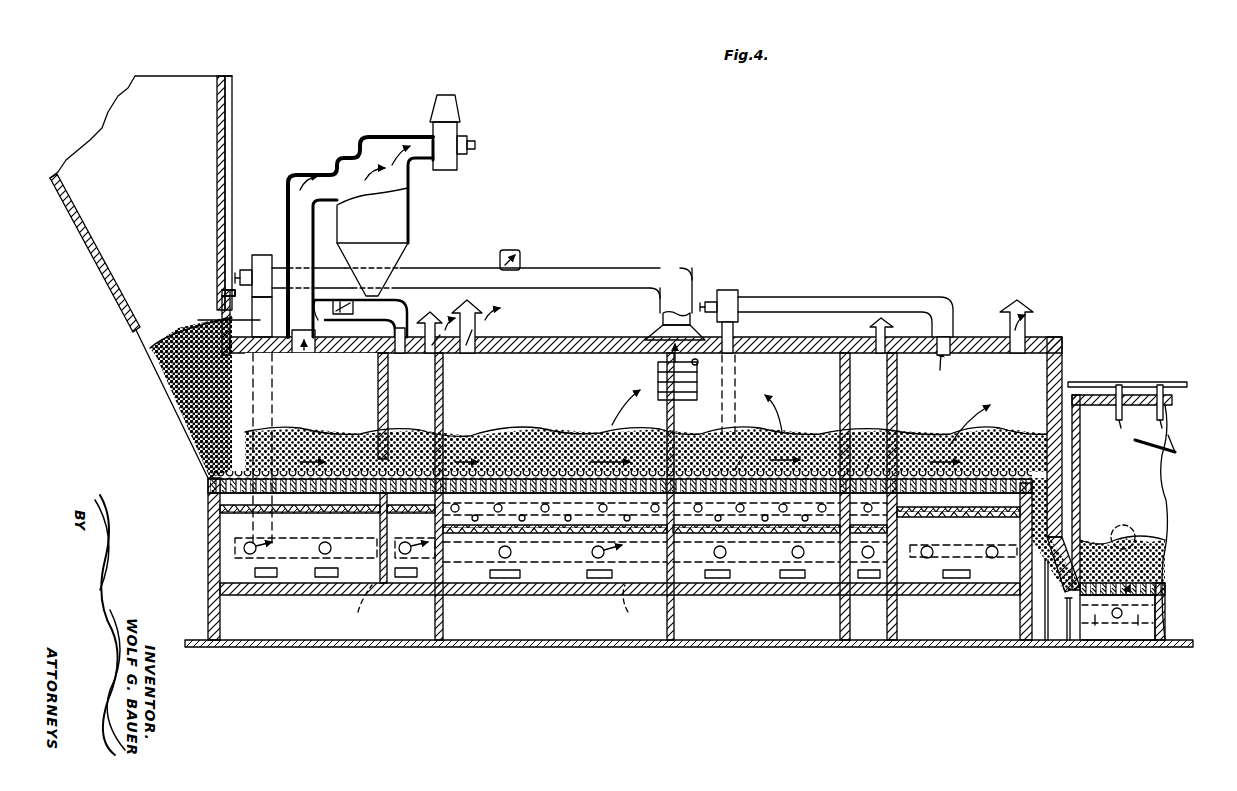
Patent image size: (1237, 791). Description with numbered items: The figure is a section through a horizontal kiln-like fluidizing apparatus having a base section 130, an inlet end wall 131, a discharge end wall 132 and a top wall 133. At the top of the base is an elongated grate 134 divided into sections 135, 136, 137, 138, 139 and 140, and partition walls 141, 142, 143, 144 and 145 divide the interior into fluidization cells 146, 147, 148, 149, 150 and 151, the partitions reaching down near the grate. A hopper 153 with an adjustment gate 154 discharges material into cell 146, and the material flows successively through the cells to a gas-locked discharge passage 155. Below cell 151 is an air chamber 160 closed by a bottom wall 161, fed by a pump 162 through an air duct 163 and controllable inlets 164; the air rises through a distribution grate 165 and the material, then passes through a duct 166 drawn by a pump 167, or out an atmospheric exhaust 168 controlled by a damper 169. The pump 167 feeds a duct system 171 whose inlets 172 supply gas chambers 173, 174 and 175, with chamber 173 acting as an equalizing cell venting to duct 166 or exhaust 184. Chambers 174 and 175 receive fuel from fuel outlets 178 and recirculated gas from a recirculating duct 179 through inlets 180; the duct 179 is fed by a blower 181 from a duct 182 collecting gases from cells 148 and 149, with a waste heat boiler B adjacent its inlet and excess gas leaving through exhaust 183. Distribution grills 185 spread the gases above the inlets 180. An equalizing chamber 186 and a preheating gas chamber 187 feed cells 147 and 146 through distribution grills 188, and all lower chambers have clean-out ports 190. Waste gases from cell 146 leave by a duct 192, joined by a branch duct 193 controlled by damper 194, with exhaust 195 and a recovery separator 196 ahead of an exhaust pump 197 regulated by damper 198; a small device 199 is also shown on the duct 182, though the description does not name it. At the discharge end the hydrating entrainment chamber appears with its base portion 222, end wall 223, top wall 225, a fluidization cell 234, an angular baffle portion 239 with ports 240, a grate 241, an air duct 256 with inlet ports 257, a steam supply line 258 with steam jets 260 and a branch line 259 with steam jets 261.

The base section 130 is at (208, 556).
The inlet end wall 131 is at (262, 385).
The discharge end wall 132 is at (1047, 385).
The top wall 133 is at (562, 340).
The elongated grate 134 is at (212, 489).
The grate section 135 is at (262, 522).
The grate section 136 is at (395, 470).
The grate section 137 is at (550, 470).
The grate section 138 is at (690, 470).
The grate section 139 is at (860, 470).
The grate section 140 is at (972, 470).
The partition wall 141 is at (378, 378).
The partition wall 142 is at (443, 383).
The partition wall 143 is at (667, 424).
The partition wall 144 is at (840, 405).
The partition wall 145 is at (897, 395).
The fluidization cell 146 is at (188, 416).
The fluidization cell 147 is at (400, 400).
The fluidization cell 148 is at (545, 365).
The fluidization cell 149 is at (778, 380).
The fluidization cell 150 is at (897, 377).
The fluidization cell 151 is at (978, 375).
The hopper 153 is at (186, 82).
The adjustment gate 154 is at (232, 288).
The gas-locked discharge passage 155 is at (1078, 503).
The air chamber 160 is at (983, 585).
The bottom wall 161 is at (370, 598).
The pump 162 is at (1130, 530).
The air duct 163 is at (1024, 618).
The individually controllable inlets 164 is at (988, 546).
The distribution grate 165 is at (975, 517).
The duct 166 is at (840, 297).
The pump 167 is at (728, 290).
The atmospheric exhaust 168 is at (1030, 325).
The damper 169 is at (1019, 300).
The duct system 171 is at (745, 428).
The individually controlled inlets 172 is at (809, 452).
The equalizing or cleaning cell 173 is at (862, 598).
The gas chamber 174 is at (768, 598).
The gas chamber 175 is at (560, 598).
The fuel outlets 178 is at (522, 518).
The recirculating duct 179 is at (268, 468).
The inlets 180 is at (398, 545).
The blower 181 is at (263, 257).
The duct 182 is at (662, 268).
The atmospheric exhaust 183 is at (478, 326).
The atmospheric exhaust 184 is at (882, 325).
The distribution grills 185 is at (480, 535).
The equalizing chamber 186 is at (425, 580).
The preheating gas chamber 187 is at (300, 580).
The distribution grills 188 is at (250, 540).
The clean-out ports 190 is at (262, 580).
The duct 192 is at (305, 248).
The branch duct 193 is at (395, 300).
The damper 194 is at (343, 314).
The atmospheric exhaust 195 is at (436, 318).
The recovery separator 196 is at (408, 218).
The exhaust pump 197 is at (450, 125).
The damper 198 is at (428, 136).
The sensor 199 is at (520, 255).
The base portion 222 is at (1085, 645).
The end wall 223 is at (1082, 472).
The top wall 225 is at (1125, 395).
The fluidization cell 234 is at (1166, 478).
The upper baffle portion 239 is at (1135, 441).
The ports 240 is at (1172, 438).
The grate 241 is at (1165, 589).
The duct 256 is at (1046, 645).
The inlet ports 257 is at (1120, 640).
The steam supply line 258 is at (1067, 642).
The branch line 259 is at (1097, 382).
The steam jets 260 is at (1150, 645).
The steam jets 261 is at (1150, 445).
The waste heat boiler B is at (700, 378).